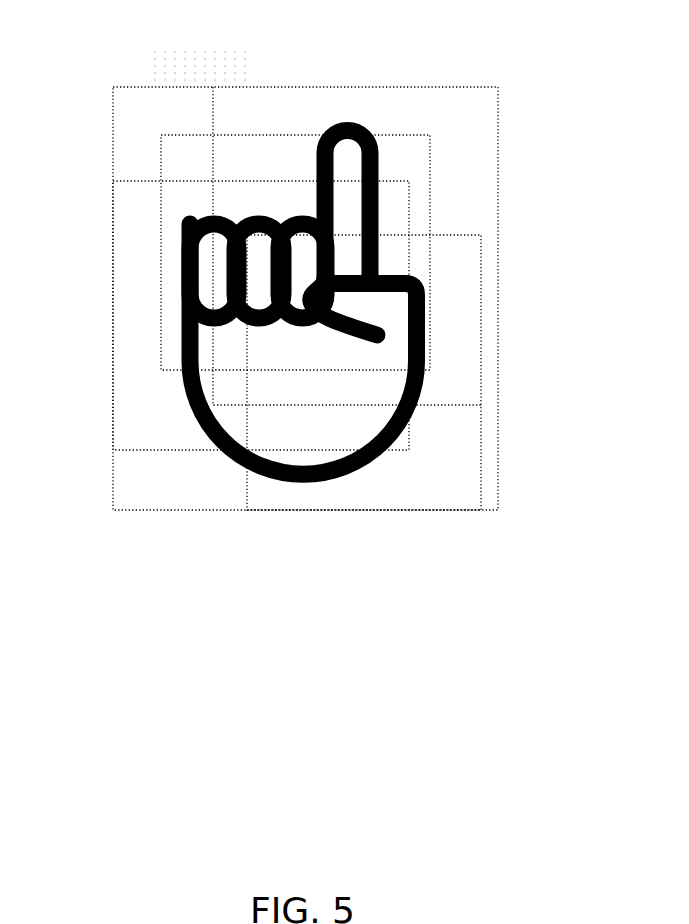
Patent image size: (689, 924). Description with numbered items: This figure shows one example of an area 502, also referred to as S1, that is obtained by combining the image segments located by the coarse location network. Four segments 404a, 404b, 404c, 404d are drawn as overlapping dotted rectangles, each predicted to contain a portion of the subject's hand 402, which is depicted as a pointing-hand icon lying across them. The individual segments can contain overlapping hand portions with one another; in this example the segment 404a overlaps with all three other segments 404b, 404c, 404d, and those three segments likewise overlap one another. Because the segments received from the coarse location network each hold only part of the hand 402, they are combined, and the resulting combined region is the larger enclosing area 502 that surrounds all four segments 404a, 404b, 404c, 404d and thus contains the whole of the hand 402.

The area 502 is at (173, 72).
The segment 404a is at (430, 143).
The segment 404b is at (409, 218).
The segment 404c is at (130, 182).
The segment 404d is at (481, 320).
The hand 402 is at (237, 467).